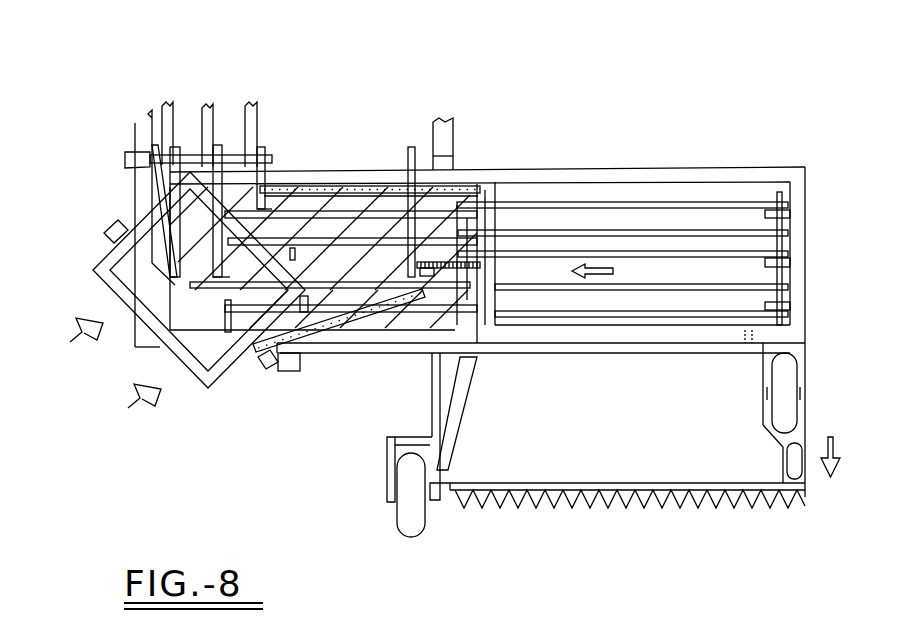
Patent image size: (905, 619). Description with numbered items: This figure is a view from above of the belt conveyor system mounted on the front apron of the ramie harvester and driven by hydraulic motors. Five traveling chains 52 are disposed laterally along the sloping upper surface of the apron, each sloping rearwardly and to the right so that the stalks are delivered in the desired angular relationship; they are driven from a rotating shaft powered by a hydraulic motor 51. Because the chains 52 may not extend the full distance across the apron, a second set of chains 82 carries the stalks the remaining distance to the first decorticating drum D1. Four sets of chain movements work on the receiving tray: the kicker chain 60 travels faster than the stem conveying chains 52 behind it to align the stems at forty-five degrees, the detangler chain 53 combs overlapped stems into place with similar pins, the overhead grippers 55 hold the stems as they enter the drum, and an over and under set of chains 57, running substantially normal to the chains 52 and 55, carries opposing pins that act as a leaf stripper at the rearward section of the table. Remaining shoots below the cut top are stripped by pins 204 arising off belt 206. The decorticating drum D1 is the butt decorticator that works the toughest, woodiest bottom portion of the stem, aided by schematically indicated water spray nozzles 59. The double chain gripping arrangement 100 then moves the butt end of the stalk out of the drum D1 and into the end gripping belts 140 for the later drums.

The transport belt 100 is at (207, 102).
The belt array 140 is at (166, 104).
The pins 204 is at (383, 184).
The belt 206 is at (353, 188).
The second set of chains 82 is at (337, 212).
The over and under set of chains 57 is at (420, 152).
The decorticating drum D1 is at (168, 302).
The water spray nozzles 59 is at (87, 318).
The overhead grippers 55 is at (307, 308).
The hydraulic motor 51 is at (430, 265).
The traveling chains 52 is at (762, 285).
The detangler chain 53 is at (347, 320).
The kicker chain 60 is at (377, 356).